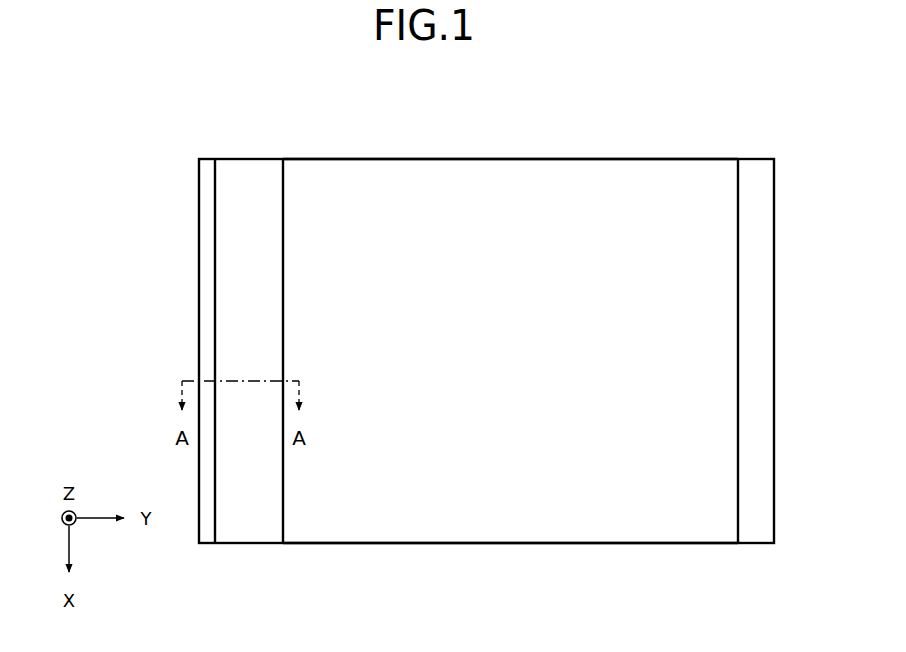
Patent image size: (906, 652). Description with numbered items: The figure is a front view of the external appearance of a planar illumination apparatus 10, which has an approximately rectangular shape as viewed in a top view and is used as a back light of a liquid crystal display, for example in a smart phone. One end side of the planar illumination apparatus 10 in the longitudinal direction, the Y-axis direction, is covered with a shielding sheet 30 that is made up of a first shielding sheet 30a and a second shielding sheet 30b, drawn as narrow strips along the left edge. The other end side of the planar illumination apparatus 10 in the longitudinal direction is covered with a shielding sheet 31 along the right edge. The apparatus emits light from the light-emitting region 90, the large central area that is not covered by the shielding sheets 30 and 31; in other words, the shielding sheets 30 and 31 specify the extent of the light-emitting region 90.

The planar illumination apparatus 10 is at (666, 132).
The light-emitting region 90 is at (511, 226).
The shielding sheet 30 is at (228, 400).
The first shielding sheet 30a is at (205, 540).
The second shielding sheet 30b is at (259, 376).
The shielding sheet 31 is at (753, 532).